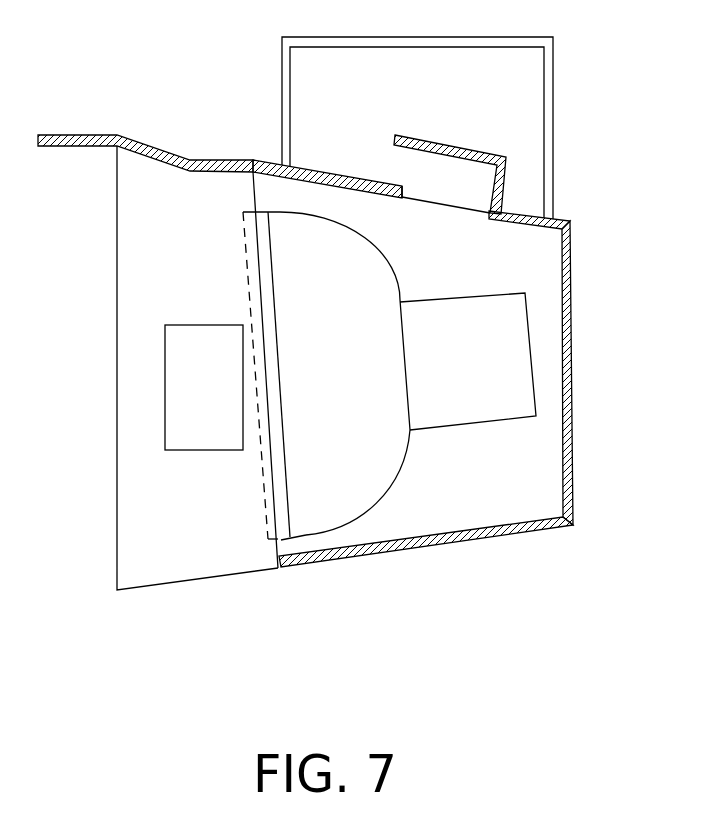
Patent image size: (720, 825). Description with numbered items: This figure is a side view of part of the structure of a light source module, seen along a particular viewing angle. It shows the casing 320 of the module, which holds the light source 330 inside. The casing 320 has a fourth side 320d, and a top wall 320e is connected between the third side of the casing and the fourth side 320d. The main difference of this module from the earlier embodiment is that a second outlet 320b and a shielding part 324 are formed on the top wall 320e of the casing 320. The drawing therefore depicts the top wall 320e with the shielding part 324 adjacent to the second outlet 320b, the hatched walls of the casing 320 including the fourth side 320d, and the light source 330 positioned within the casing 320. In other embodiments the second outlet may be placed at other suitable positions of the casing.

The casing 320 is at (532, 532).
The second outlet 320b is at (410, 193).
The fourth side 320d is at (462, 518).
The top wall 320e is at (345, 175).
The shielding part 324 is at (465, 148).
The light source 330 is at (332, 495).